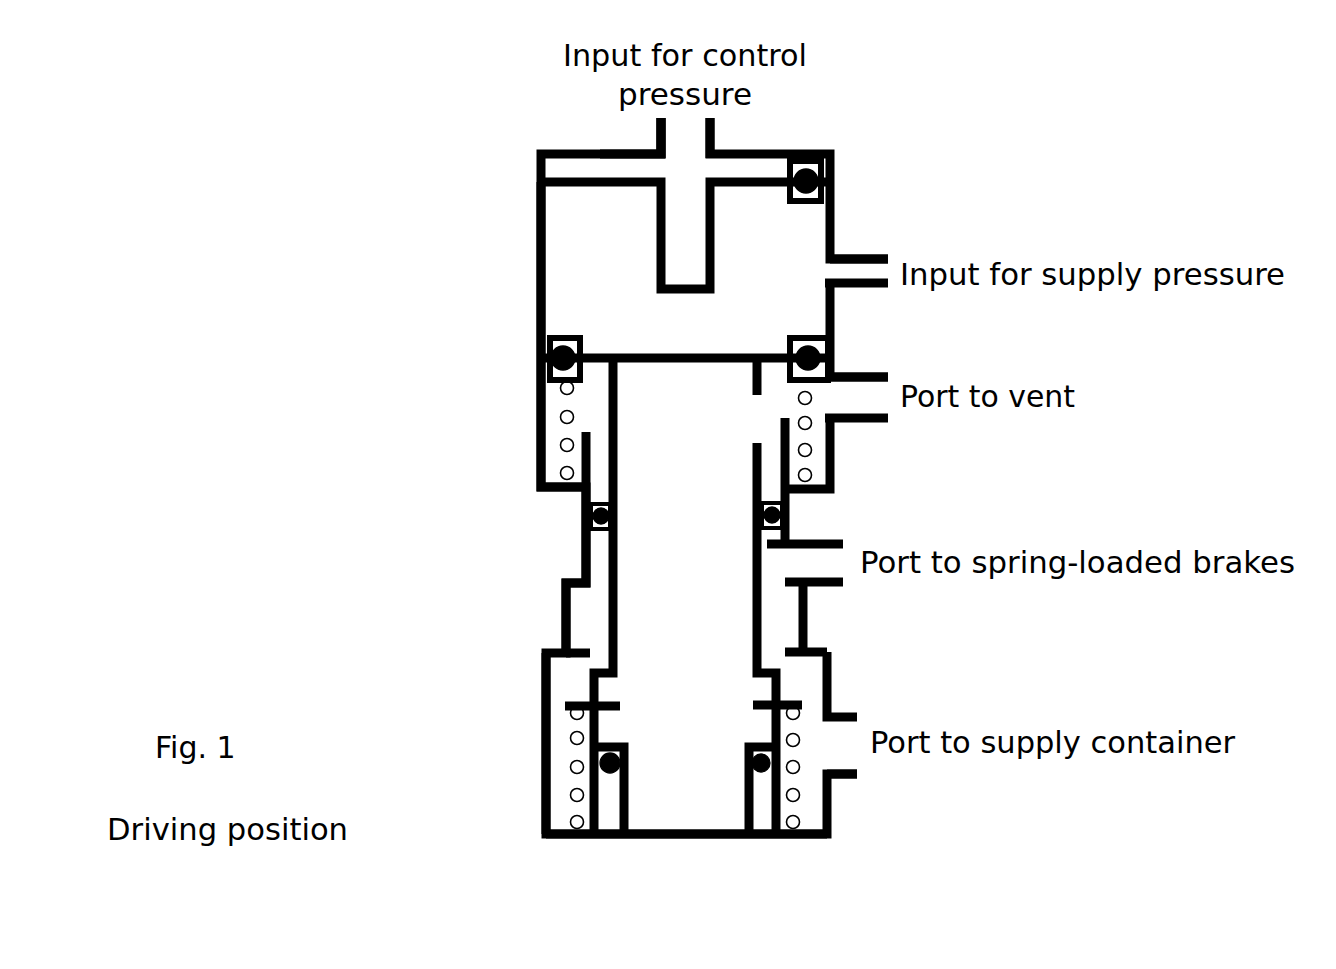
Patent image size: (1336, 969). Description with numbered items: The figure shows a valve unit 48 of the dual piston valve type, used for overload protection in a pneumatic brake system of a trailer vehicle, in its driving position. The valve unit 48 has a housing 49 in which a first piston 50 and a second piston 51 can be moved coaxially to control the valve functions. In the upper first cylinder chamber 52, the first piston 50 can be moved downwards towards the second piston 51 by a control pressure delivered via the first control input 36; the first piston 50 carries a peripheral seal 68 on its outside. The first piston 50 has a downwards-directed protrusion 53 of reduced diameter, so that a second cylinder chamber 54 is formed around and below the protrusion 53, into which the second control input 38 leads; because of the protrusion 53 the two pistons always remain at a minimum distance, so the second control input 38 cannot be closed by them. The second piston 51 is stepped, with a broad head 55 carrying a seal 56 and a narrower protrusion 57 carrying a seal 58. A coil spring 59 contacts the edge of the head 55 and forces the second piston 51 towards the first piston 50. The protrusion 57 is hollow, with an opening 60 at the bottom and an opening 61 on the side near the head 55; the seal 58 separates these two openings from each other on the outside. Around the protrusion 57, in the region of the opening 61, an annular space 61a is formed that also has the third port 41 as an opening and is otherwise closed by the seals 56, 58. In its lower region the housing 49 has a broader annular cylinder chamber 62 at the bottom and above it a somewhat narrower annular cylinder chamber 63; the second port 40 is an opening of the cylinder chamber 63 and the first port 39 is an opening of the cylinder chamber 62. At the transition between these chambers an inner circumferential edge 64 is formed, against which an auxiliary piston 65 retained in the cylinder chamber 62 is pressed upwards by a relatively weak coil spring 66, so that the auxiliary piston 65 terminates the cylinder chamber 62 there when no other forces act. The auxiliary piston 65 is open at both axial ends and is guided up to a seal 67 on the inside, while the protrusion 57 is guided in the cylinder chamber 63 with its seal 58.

The valve unit 48 is at (900, 142).
The first piston 50 is at (777, 150).
The first cylinder chamber 52 is at (605, 148).
The first control input 36 is at (713, 126).
The peripheral seal 68 is at (833, 175).
The protrusion 53 is at (678, 216).
The head 55 is at (645, 353).
The second cylinder chamber 54 is at (568, 293).
The seal 56 is at (533, 350).
The housing 49 is at (540, 389).
The annular space 61a is at (583, 400).
The coil spring 59 is at (583, 415).
The seal 58 is at (590, 517).
The protrusion 57 is at (677, 550).
The cylinder chamber 63 is at (593, 603).
The inner circumferential edge 64 is at (586, 658).
The auxiliary piston 65 is at (580, 718).
The cylinder chamber 62 is at (562, 740).
The seal 67 is at (580, 770).
The coil spring 66 is at (577, 800).
The opening 60 is at (686, 688).
The second piston 51 is at (740, 350).
The third port 41 is at (888, 378).
The opening 61 is at (768, 421).
The second port 40 is at (843, 542).
The first port 39 is at (848, 712).
The second control input 38 is at (868, 258).